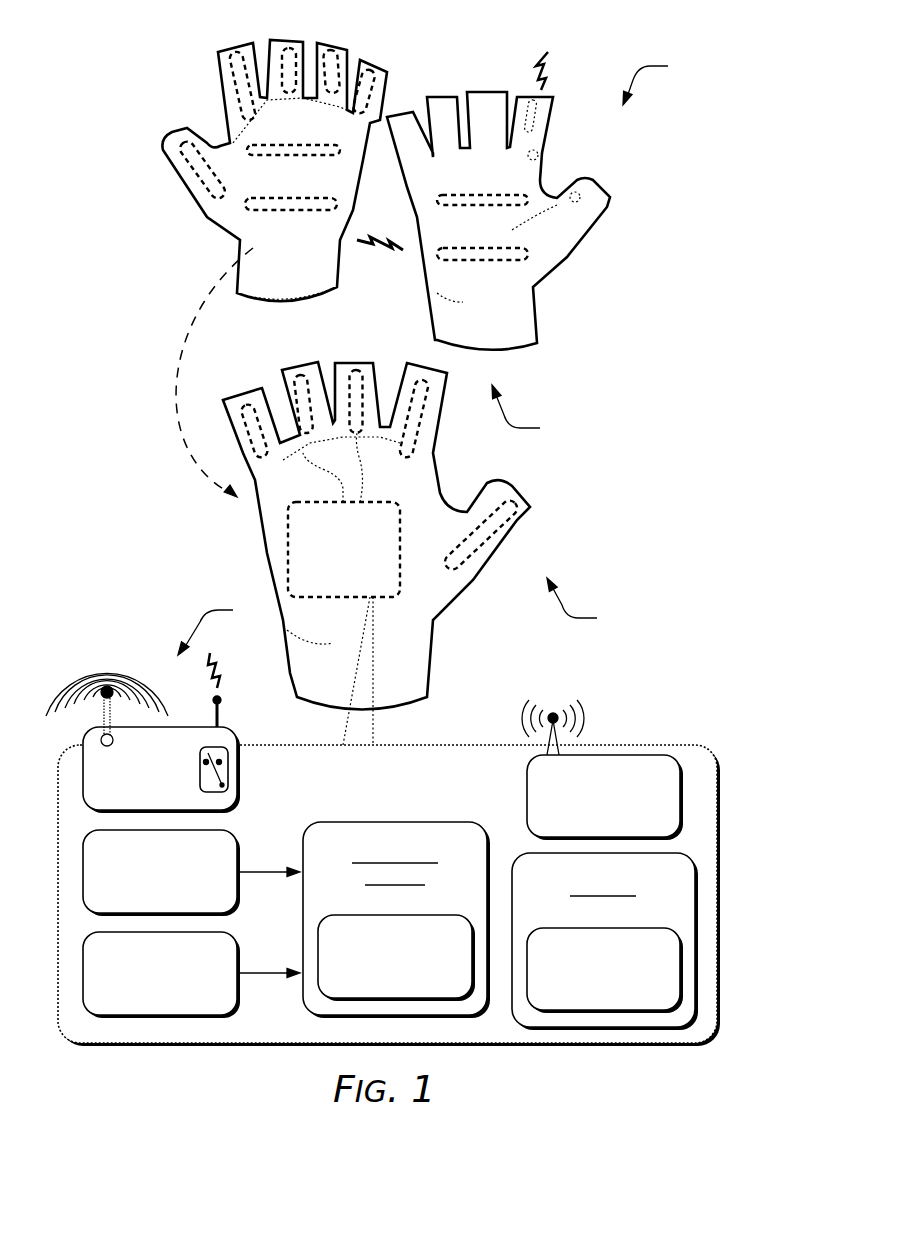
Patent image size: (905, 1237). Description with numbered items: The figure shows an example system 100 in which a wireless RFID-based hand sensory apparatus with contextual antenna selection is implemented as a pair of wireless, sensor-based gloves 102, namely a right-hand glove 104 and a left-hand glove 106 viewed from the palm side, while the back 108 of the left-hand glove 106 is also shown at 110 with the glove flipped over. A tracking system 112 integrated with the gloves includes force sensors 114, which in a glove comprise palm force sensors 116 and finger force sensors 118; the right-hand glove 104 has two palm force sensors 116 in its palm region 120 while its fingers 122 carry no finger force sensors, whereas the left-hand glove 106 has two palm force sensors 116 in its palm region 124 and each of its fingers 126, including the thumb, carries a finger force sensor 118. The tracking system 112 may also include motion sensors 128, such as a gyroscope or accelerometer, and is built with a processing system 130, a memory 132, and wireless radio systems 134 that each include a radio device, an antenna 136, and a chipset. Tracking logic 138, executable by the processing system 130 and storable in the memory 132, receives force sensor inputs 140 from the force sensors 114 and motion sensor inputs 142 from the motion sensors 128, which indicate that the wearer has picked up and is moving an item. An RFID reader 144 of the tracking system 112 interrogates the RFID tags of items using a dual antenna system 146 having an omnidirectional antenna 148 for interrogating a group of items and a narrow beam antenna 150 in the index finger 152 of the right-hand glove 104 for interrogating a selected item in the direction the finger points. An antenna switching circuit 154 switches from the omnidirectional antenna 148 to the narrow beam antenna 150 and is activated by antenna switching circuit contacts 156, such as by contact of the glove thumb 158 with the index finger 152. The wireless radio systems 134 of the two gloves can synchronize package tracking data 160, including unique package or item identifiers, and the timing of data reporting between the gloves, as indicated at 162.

The system 100 is at (668, 80).
The pair of gloves 102 is at (402, 536).
The right-hand glove 104 is at (560, 270).
The left-hand glove 106 is at (212, 217).
The back of the left-hand glove 108 is at (423, 600).
The flipped-over view of left-hand glove 110 is at (592, 603).
The tracking system 112 is at (477, 787).
The force sensor 114 is at (145, 902).
The palm force sensor 116 is at (307, 210).
The finger force sensor 118 is at (237, 63).
The palm region 120 is at (475, 236).
The fingers 122 is at (443, 92).
The palm region 124 is at (300, 186).
The fingers 126 is at (207, 143).
The motion sensor 128 is at (145, 1004).
The processing system 130 is at (380, 907).
The memory 132 is at (588, 918).
The wireless radio systems 134 is at (588, 826).
The antenna 136 is at (627, 740).
The tracking logic 138 is at (380, 988).
The force sensor inputs 140 is at (322, 490).
The motion sensor inputs 142 is at (284, 961).
The RFID reader 144 is at (145, 799).
The dual antenna system 146 is at (225, 627).
The omnidirectional antenna 148 is at (113, 697).
The narrow beam antenna 150 is at (527, 107).
The index finger 152 is at (540, 110).
The antenna switching circuit 154 is at (228, 763).
The antenna switching circuit contacts 156 is at (573, 193).
The glove thumb 158 is at (597, 205).
The package tracking data 160 is at (588, 1001).
The synchronization between gloves 162 is at (399, 285).